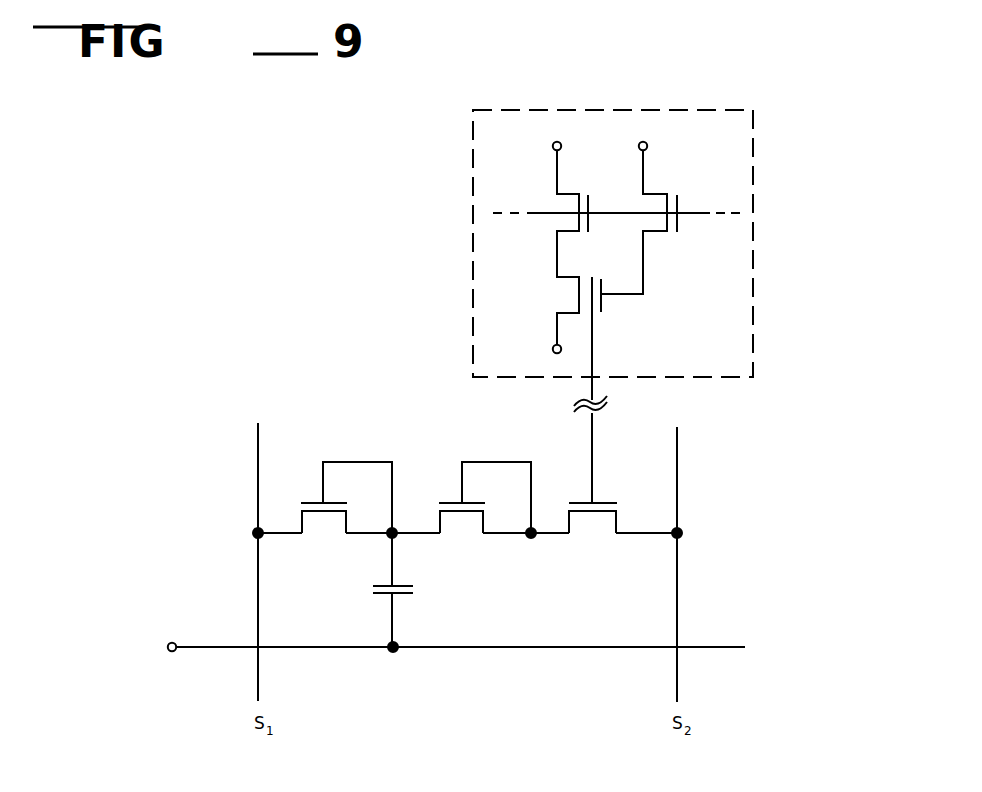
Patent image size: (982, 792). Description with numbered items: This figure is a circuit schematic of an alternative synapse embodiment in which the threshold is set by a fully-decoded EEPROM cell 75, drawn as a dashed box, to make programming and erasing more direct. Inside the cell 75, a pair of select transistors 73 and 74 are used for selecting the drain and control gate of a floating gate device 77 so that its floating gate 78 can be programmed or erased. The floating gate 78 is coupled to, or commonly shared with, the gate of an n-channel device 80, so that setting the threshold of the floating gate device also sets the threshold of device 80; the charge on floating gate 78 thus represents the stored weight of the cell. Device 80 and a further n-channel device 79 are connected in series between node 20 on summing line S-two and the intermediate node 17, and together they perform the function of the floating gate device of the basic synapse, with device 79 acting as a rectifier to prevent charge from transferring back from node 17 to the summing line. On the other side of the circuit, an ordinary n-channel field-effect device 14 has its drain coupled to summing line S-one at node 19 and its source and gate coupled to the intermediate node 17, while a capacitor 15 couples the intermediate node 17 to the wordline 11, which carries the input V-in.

The wordline 11 is at (717, 646).
The n-channel field-effect device 14 is at (324, 526).
The capacitor 15 is at (416, 591).
The intermediate node 17 is at (395, 530).
The node 19 is at (256, 533).
The node 20 is at (680, 533).
The transistor 73 is at (567, 206).
The transistor 74 is at (655, 208).
The EEPROM cell 75 is at (753, 261).
The floating gate device 77 is at (602, 322).
The floating gate 78 is at (595, 278).
The n-channel device 79 is at (461, 528).
The n-channel device 80 is at (590, 528).